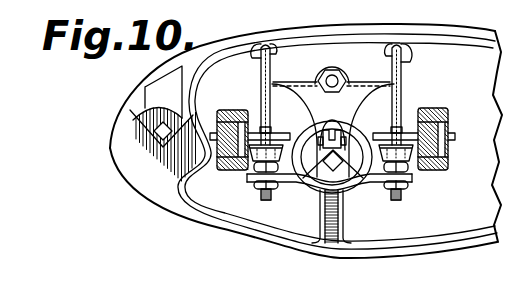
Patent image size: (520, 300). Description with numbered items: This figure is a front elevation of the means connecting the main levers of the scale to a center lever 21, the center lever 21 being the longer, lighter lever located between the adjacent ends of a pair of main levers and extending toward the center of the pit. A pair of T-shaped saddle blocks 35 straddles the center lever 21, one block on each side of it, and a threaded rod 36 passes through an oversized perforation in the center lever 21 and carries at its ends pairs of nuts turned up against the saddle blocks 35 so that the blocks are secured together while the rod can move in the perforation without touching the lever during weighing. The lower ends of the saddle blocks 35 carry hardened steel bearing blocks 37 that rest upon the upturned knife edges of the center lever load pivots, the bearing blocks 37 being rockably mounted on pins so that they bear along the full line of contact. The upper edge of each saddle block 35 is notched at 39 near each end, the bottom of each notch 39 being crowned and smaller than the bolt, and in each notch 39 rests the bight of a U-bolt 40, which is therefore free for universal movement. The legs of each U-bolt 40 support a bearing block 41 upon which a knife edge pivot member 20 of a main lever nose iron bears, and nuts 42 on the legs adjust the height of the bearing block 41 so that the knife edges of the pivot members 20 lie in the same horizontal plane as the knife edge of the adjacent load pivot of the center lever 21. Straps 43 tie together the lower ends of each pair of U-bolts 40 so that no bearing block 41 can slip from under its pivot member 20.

The knife edge pivot member 20 is at (280, 134).
The center lever 21 is at (118, 141).
The saddle block 35 is at (362, 52).
The threaded rod 36 is at (332, 67).
The bearing block 37 is at (320, 160).
The notch 39 is at (262, 46).
The U-bolt 40 is at (261, 97).
The bearing block 41 is at (250, 175).
The nut 42 is at (413, 175).
The strap 43 is at (346, 174).